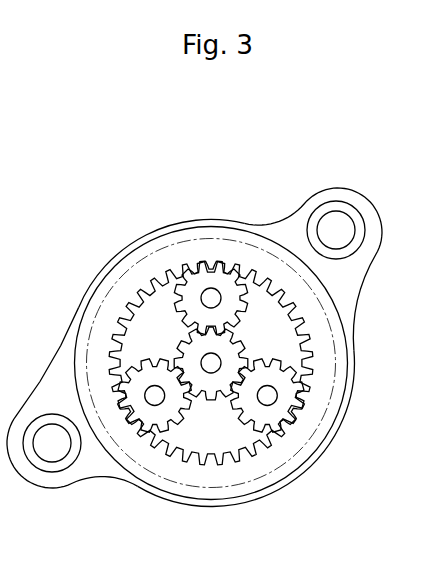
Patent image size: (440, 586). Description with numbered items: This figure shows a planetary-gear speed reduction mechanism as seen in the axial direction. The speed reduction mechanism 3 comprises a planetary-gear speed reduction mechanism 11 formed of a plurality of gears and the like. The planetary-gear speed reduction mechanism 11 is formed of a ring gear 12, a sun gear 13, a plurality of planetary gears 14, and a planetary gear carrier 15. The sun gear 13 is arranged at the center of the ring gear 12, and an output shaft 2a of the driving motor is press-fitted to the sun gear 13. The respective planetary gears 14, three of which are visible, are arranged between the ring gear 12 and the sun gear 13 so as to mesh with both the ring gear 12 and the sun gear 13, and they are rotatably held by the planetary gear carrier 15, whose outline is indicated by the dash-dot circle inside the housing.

The speed reduction mechanism 3 is at (194, 315).
The planetary-gear speed reduction mechanism 11 is at (155, 212).
The ring gear 12 is at (92, 316).
The sun gear 13 is at (212, 390).
The planetary gears 14 is at (211, 263).
The planetary gear carrier 15 is at (243, 240).
The output shaft 2a is at (219, 354).